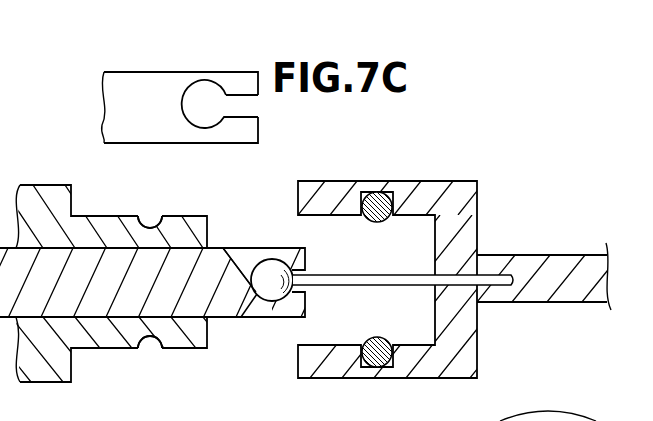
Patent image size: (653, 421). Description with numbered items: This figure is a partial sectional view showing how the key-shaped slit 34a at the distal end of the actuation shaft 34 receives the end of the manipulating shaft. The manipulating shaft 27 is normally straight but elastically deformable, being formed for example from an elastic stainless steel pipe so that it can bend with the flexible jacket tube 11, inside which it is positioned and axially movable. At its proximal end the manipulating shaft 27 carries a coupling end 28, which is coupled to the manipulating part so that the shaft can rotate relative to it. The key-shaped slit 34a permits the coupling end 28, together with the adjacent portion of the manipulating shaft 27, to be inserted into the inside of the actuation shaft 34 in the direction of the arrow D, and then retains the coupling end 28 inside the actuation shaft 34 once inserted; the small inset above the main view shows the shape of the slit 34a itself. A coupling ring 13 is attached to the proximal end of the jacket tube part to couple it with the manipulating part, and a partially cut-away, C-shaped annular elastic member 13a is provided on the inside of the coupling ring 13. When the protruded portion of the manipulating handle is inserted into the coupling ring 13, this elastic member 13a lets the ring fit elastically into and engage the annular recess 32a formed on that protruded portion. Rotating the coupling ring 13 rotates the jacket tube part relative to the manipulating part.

The jacket tube 11 is at (592, 228).
The coupling ring 13 is at (428, 172).
The annular elastic member 13a is at (378, 193).
The manipulating shaft 27 is at (496, 260).
The coupling end 28 is at (269, 295).
The annular recess 32a is at (142, 215).
The actuation shaft 34 is at (150, 63).
The key-shaped slit 34a is at (232, 234).
The arrow D is at (266, 231).